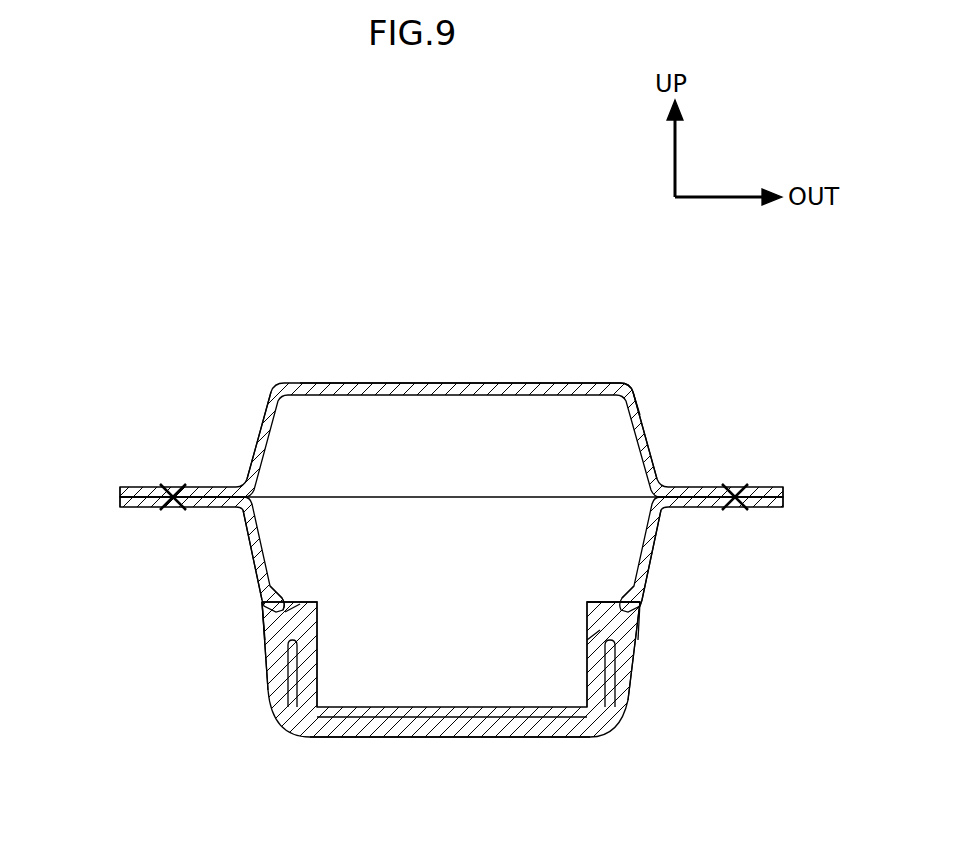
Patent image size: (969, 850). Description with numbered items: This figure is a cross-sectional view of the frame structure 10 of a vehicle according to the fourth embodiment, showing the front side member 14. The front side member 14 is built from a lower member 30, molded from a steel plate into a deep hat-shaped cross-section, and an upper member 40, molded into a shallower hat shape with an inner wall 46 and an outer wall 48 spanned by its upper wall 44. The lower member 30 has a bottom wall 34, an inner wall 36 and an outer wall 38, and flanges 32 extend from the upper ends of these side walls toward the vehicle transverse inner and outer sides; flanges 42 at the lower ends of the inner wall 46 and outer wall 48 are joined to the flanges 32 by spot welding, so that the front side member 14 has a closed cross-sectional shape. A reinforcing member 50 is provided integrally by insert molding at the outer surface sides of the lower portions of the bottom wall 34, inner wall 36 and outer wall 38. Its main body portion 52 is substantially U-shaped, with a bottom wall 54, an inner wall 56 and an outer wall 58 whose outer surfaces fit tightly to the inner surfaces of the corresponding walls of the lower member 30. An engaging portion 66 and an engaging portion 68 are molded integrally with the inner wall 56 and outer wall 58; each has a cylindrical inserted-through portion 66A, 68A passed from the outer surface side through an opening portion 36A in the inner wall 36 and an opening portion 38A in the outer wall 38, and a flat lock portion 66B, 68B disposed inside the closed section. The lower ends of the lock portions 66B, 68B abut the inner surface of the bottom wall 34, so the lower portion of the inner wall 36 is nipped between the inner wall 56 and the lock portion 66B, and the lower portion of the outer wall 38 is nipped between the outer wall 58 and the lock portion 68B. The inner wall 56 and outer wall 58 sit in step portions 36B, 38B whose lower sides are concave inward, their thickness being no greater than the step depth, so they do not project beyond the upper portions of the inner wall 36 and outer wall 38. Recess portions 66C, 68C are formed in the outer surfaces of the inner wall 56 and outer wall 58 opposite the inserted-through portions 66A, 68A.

The vehicle body structure 10 is at (300, 333).
The front side member 14 is at (408, 372).
The lower member 30 is at (243, 525).
The flanges 32 is at (130, 509).
The bottom wall 34 is at (433, 707).
The inner wall 36 is at (243, 563).
The opening portion 36A is at (284, 600).
The step portion 36B is at (265, 598).
The outer wall 38 is at (658, 532).
The opening portion 38A is at (643, 650).
The step portion 38B is at (645, 598).
The upper member 40 is at (572, 383).
The flanges 42 is at (140, 485).
The top wall portion 44 is at (458, 383).
The inner wall 46 is at (262, 420).
The outer wall 48 is at (648, 440).
The reinforcing member 50 is at (605, 598).
The main body portion 52 is at (463, 637).
The bottom wall 54 is at (445, 738).
The inner wall 56 is at (265, 660).
The outer wall 58 is at (634, 665).
The engaging portion 66 is at (320, 630).
The inserted-through portion 66A is at (292, 612).
The lock portion 66B is at (300, 690).
The recess portion 66C is at (265, 625).
The engaging portion 68 is at (585, 623).
The inserted-through portion 68A is at (588, 640).
The lock portion 68B is at (600, 662).
The recess portion 68C is at (642, 625).